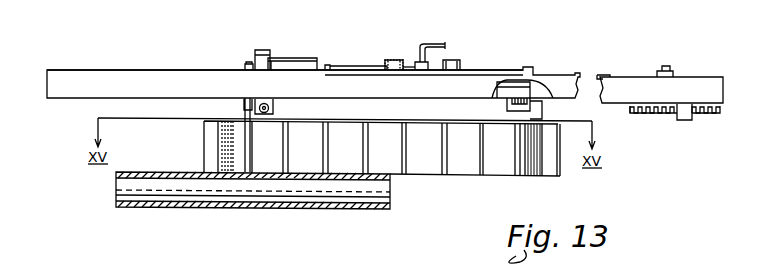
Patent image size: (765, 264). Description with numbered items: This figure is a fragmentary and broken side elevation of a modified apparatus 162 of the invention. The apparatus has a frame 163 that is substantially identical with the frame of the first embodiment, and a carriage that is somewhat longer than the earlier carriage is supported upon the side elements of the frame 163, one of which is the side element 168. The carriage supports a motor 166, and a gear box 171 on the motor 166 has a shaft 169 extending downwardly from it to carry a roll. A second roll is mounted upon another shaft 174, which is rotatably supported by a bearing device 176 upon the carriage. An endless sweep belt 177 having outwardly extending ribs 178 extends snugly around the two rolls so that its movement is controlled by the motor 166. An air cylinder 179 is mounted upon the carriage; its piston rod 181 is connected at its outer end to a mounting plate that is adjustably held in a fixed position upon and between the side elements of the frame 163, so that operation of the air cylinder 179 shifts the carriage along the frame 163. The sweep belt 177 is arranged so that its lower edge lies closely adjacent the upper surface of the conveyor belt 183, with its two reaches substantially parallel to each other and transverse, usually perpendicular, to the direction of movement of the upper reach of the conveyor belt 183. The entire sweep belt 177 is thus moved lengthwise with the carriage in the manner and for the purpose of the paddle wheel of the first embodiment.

The modified apparatus 162 is at (231, 25).
The frame 163 is at (100, 47).
The motor 166 is at (320, 30).
The side element 168 is at (174, 47).
The shaft 169 is at (245, 104).
The gear box 171 is at (240, 66).
The shaft 174 is at (510, 111).
The bearing device 176 is at (545, 78).
The endless sweep belt 177 is at (468, 164).
The ribs 178 is at (401, 174).
The air cylinder 179 is at (372, 42).
The piston rod 181 is at (597, 71).
The conveyor belt 183 is at (196, 206).